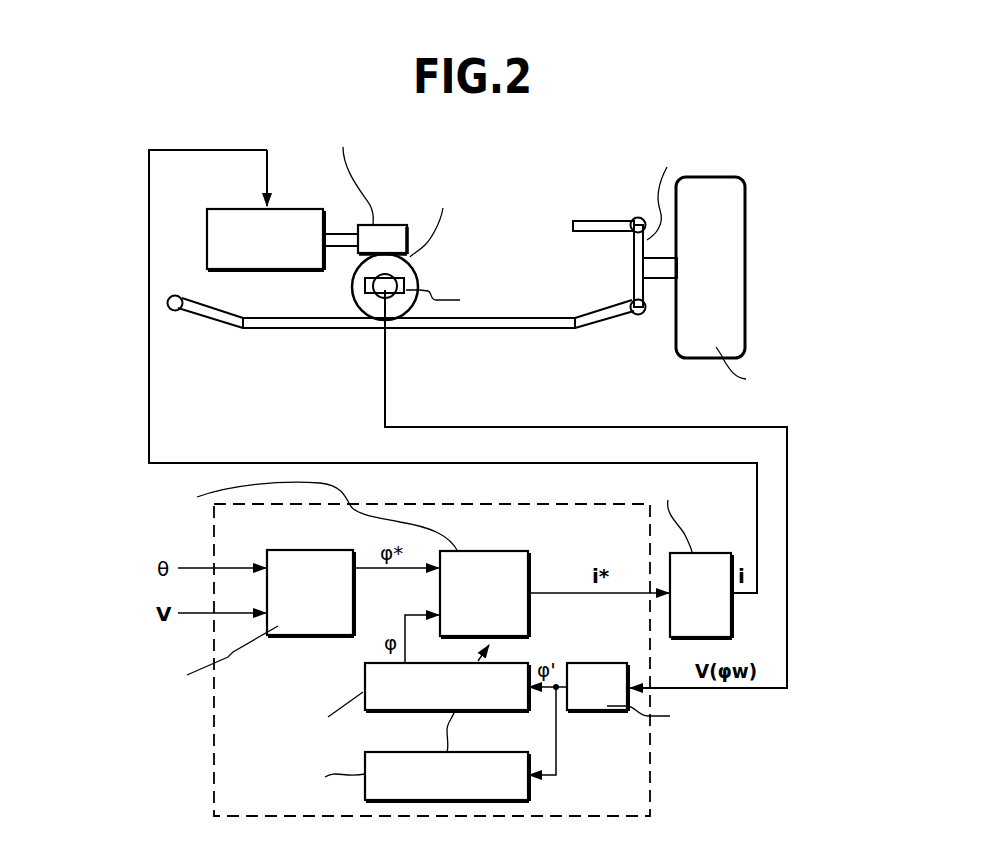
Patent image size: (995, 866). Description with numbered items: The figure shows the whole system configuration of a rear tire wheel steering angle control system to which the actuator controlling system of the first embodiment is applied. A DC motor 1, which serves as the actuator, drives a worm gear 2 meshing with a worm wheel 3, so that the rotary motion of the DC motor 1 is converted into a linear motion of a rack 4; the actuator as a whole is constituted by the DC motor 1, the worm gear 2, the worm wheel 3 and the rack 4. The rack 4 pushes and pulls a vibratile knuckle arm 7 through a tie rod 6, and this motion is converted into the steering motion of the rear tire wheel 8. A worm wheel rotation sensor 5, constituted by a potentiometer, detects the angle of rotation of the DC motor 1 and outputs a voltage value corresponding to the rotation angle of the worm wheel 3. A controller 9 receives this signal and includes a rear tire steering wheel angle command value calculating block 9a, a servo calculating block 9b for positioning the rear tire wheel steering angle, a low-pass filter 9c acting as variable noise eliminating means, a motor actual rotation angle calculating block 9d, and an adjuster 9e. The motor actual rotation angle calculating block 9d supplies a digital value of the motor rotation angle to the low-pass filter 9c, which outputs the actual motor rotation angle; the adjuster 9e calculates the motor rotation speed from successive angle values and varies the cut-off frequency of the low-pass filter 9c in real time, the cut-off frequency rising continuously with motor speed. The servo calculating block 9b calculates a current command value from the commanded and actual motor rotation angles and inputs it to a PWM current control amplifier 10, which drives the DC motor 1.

The DC motor 1 is at (307, 208).
The worm gear 2 is at (392, 225).
The worm wheel 3 is at (414, 274).
The rack 4 is at (437, 330).
The worm wheel rotation sensor 5 is at (406, 289).
The tie rod 6 is at (598, 328).
The knuckle arm 7 is at (634, 280).
The rear tire wheel 8 is at (700, 362).
The controller 9 is at (300, 708).
The rear tire steering wheel angle command value calculating block 9a is at (186, 673).
The servo calculating block 9b is at (484, 594).
The low-pass filter 9c is at (385, 707).
The motor actual rotation angle calculating block 9d is at (722, 727).
The adjuster 9e is at (379, 776).
The PWM current control amplifier 10 is at (683, 553).